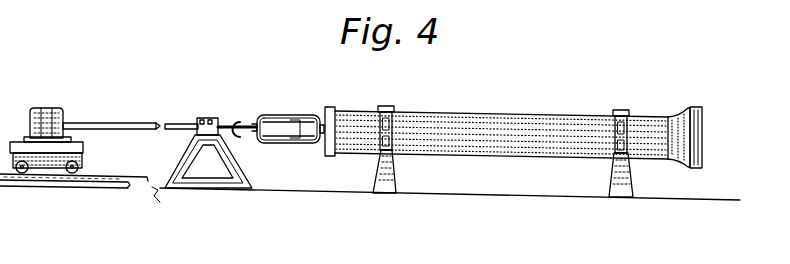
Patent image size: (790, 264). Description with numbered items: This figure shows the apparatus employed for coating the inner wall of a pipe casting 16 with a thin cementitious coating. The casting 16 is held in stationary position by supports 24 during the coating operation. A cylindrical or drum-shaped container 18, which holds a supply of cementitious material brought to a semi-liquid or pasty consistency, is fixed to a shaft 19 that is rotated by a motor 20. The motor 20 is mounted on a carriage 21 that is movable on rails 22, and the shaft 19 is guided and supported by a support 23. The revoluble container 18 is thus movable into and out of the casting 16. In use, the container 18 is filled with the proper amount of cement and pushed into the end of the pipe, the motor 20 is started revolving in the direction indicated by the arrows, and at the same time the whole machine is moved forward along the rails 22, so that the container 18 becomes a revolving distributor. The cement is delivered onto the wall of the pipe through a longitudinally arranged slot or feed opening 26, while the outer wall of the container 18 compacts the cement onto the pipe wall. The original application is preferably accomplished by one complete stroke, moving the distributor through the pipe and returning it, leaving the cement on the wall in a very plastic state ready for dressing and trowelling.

The casting 16 is at (540, 113).
The drum-shaped container 18 is at (284, 117).
The shaft 19 is at (160, 124).
The motor 20 is at (50, 108).
The carriage 21 is at (78, 150).
The rails 22 is at (126, 189).
The support 23 is at (220, 124).
The supports 24 is at (389, 181).
The feed opening 26 is at (292, 128).